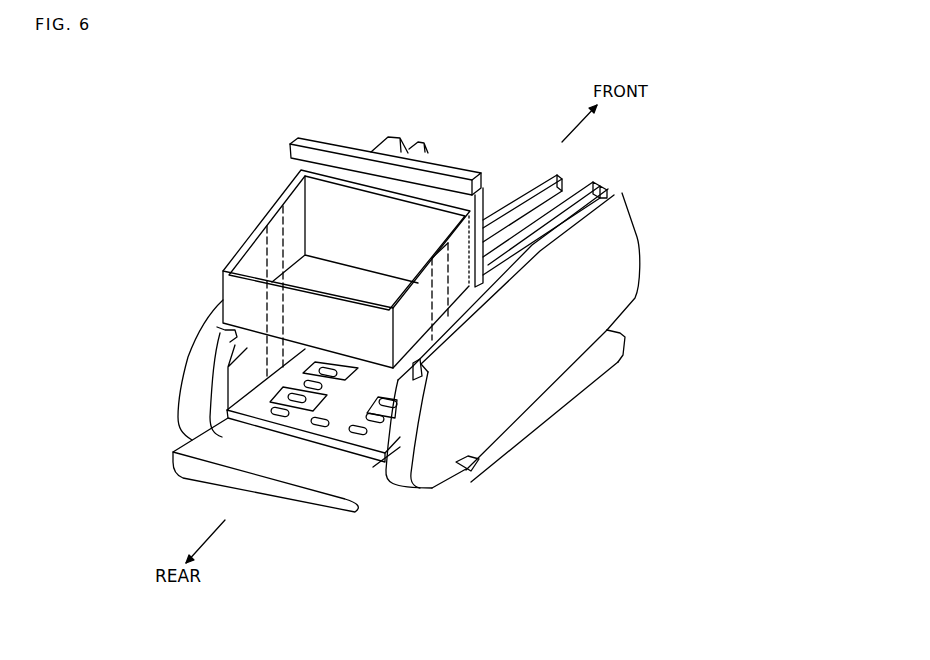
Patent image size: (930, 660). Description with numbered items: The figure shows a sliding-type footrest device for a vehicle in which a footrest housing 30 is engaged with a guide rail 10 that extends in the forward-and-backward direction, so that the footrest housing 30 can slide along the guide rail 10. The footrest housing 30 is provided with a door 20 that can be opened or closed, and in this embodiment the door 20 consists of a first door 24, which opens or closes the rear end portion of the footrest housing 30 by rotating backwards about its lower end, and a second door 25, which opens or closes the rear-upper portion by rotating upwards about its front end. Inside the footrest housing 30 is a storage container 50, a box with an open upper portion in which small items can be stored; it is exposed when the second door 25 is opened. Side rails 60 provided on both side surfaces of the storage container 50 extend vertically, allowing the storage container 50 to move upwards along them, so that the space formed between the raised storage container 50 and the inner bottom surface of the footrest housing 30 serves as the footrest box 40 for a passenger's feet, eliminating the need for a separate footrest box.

The guide rail 10 is at (541, 420).
The door 20 is at (265, 293).
The first door 24 is at (193, 451).
The second door 25 is at (333, 148).
The footrest housing 30 is at (618, 264).
The footrest box 40 is at (338, 389).
The storage container 50 is at (330, 220).
The side rails 60 is at (267, 253).